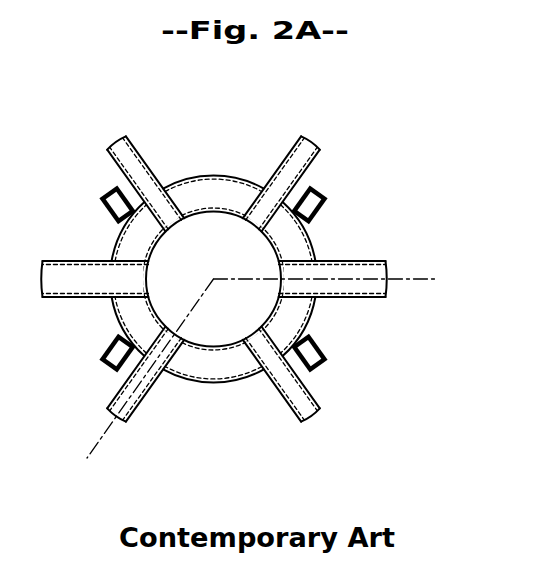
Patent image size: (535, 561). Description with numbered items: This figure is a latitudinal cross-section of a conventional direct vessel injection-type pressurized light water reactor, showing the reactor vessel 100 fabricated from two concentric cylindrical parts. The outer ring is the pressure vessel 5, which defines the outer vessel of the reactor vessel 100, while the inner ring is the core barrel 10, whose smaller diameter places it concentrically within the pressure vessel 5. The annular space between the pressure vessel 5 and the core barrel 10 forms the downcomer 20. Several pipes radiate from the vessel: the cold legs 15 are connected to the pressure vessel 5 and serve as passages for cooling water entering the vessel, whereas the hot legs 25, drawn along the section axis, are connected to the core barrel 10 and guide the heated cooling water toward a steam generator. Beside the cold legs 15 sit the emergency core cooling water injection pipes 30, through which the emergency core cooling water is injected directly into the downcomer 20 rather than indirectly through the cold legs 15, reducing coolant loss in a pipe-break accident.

The reactor vessel 100 is at (247, 280).
The pressure vessel 5 is at (201, 176).
The core barrel 10 is at (153, 246).
The cold leg 15 is at (140, 406).
The downcomer 20 is at (220, 366).
The hot leg 25 is at (366, 259).
The emergency core cooling water injection pipe 30 is at (310, 193).